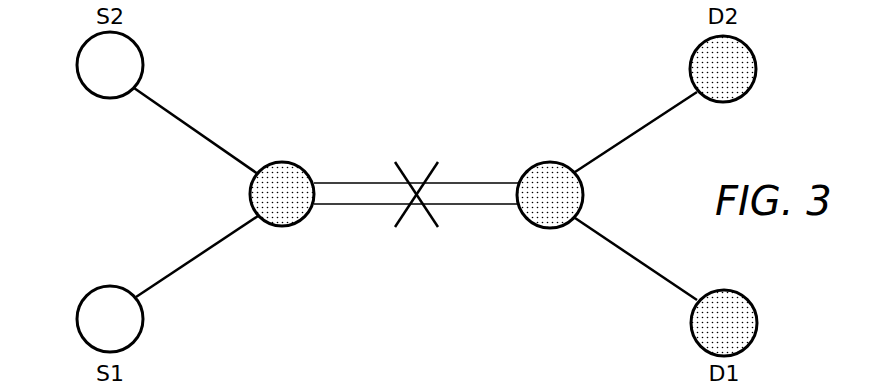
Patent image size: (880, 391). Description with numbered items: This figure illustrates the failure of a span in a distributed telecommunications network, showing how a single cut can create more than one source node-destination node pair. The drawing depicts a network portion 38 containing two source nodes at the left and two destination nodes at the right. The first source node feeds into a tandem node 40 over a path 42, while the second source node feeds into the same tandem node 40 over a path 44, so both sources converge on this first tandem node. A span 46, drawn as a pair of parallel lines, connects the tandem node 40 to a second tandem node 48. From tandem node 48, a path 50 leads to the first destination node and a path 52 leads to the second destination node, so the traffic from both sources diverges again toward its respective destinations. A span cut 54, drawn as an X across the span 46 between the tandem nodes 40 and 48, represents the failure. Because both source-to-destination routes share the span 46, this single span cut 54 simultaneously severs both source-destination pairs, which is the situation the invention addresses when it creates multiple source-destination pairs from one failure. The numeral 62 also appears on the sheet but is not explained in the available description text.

The network portion 38 is at (78, 206).
The tandem node 40 is at (290, 163).
The path 42 is at (200, 257).
The path 44 is at (200, 130).
The span 46 is at (360, 207).
The tandem node 48 is at (540, 163).
The path 50 is at (635, 258).
The path 52 is at (633, 130).
The span cut 54 is at (420, 207).
The sheet label 62 is at (506, 381).